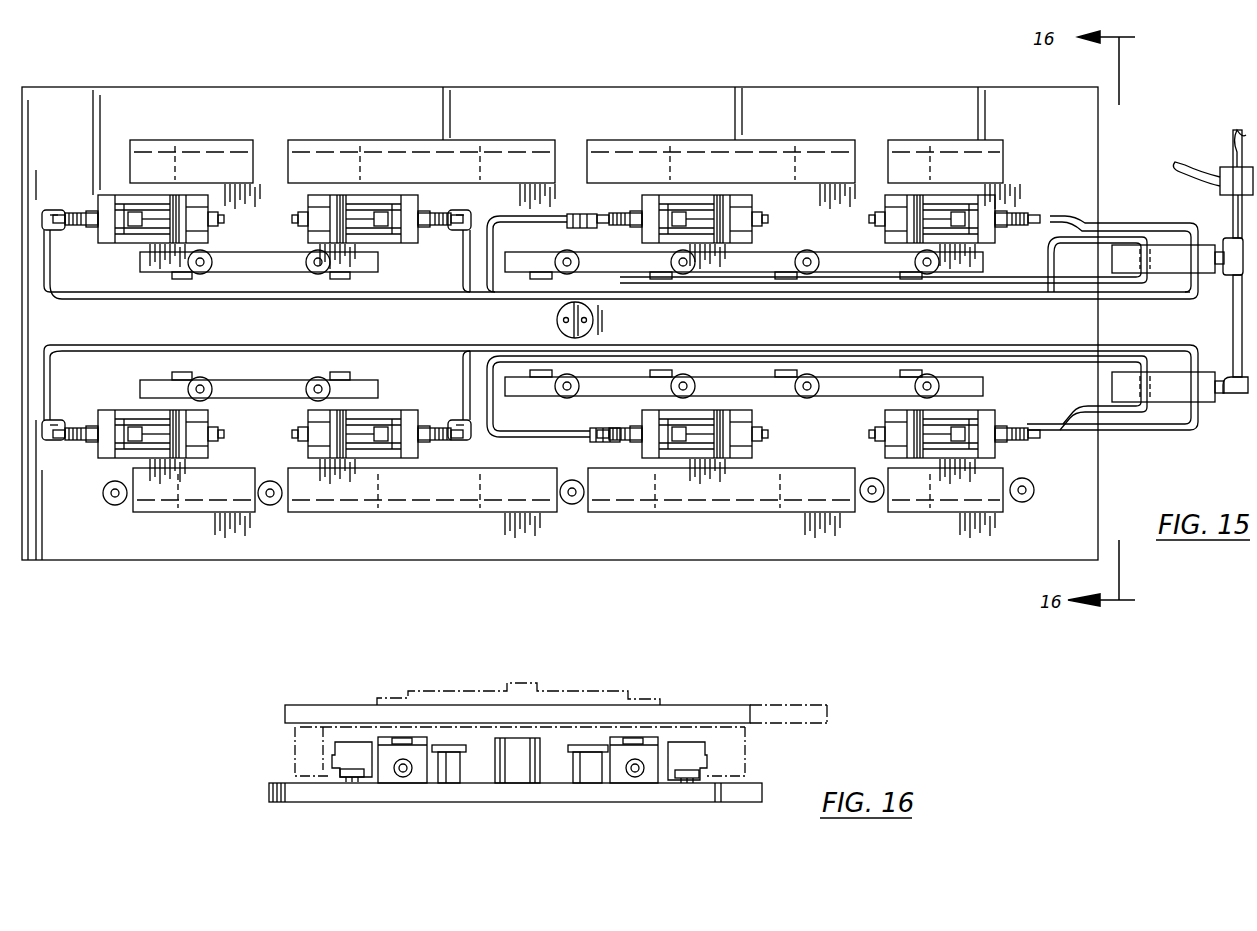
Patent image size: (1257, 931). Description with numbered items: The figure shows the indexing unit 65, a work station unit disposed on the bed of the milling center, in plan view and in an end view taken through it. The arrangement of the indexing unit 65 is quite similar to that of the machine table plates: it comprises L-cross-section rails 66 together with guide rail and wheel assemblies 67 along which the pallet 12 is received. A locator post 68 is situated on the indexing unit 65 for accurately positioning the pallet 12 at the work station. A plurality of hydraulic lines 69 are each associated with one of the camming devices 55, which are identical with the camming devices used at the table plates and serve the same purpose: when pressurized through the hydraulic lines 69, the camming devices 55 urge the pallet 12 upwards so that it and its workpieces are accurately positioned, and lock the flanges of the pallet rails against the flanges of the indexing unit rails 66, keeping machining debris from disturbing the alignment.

In FIG. 16, the pallet 12 is at (662, 713).
In FIG. 15, the camming devices 55 is at (308, 238).
In FIG. 16, the camming devices 55 is at (400, 786).
In FIG. 15, the indexing unit 65 is at (480, 553).
In FIG. 16, the indexing unit 65 is at (682, 790).
In FIG. 15, the L-cross-section rails 66 is at (230, 140).
In FIG. 16, the L-cross-section rails 66 is at (355, 742).
In FIG. 15, the guide rail and wheel assemblies 67 is at (312, 272).
In FIG. 16, the guide rail and wheel assemblies 67 is at (452, 786).
In FIG. 15, the locator post 68 is at (558, 323).
In FIG. 16, the locator post 68 is at (517, 786).
In FIG. 15, the hydraulic lines 69 is at (158, 297).